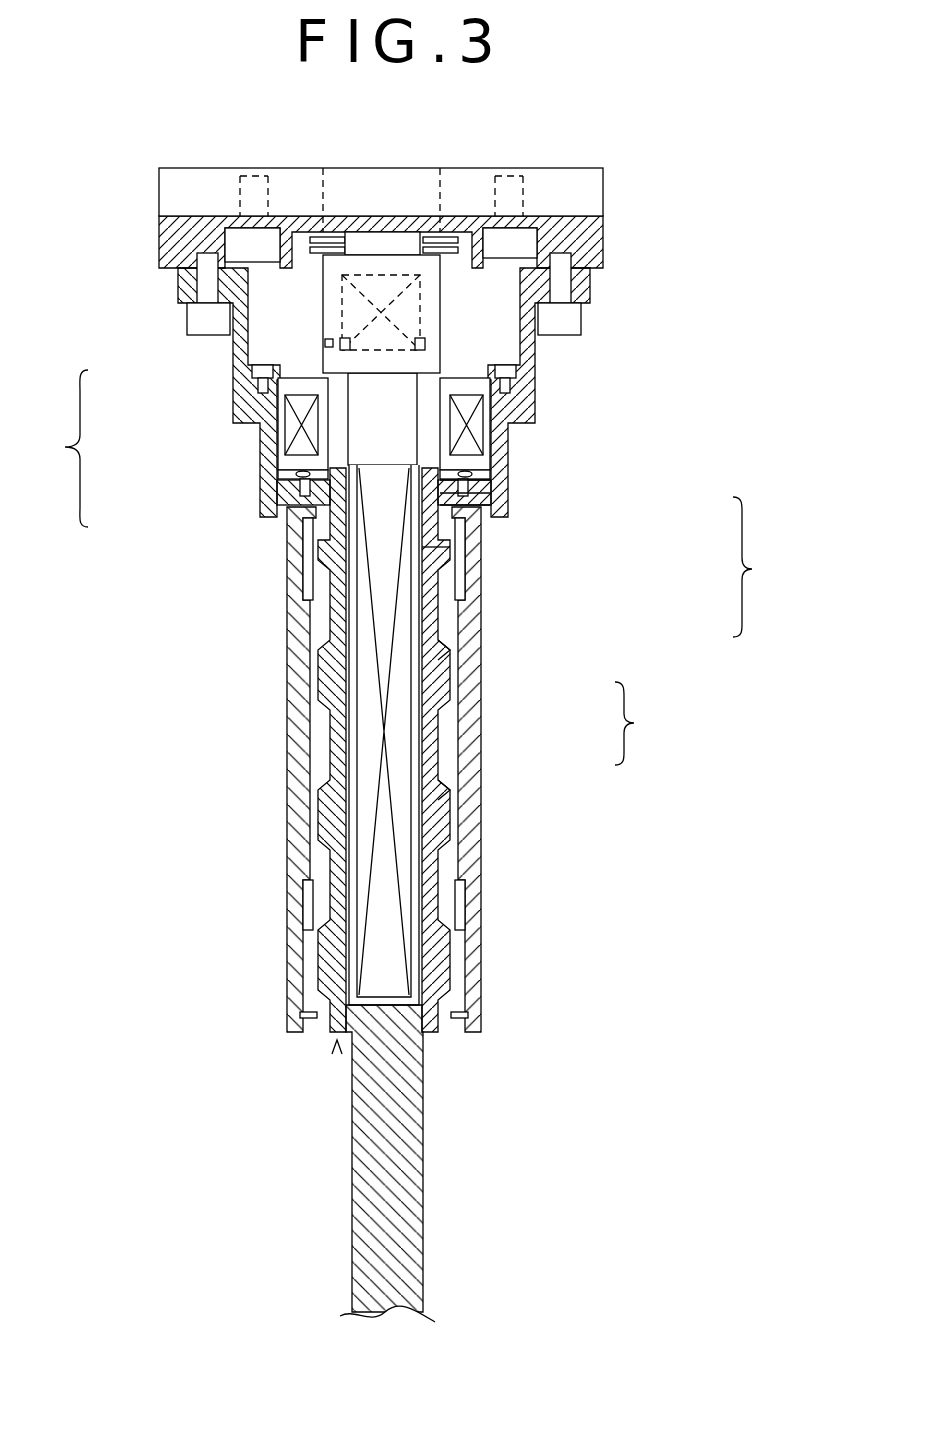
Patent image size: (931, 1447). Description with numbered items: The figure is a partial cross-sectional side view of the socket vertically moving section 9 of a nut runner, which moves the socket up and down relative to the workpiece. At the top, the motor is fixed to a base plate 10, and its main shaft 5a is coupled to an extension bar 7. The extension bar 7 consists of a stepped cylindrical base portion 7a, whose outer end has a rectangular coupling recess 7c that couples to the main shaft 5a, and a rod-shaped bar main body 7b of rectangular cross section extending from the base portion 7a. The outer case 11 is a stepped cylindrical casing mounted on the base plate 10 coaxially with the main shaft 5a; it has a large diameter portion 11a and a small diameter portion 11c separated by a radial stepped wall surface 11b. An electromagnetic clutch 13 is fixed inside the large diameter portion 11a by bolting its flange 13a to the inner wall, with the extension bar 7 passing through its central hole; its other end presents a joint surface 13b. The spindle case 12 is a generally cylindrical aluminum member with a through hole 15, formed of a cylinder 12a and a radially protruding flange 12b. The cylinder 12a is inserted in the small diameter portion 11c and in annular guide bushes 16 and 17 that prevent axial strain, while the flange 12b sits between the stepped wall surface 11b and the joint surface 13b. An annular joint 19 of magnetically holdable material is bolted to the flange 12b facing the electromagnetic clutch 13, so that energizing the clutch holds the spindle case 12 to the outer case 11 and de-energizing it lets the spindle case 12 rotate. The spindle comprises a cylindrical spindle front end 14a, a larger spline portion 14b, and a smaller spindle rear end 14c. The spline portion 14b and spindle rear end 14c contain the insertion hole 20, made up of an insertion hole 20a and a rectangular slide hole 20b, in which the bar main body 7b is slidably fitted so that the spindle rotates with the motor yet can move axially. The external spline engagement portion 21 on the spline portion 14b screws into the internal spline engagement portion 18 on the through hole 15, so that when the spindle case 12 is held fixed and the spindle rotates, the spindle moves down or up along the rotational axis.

The base plate 10 is at (583, 192).
The main shaft 5a is at (383, 307).
The socket vertically moving section 9 is at (702, 391).
The extension bar 7 is at (212, 447).
The base portion 7a is at (325, 343).
The bar main body 7b is at (380, 608).
The coupling recess 7c is at (383, 307).
The flange 13a is at (514, 370).
The electromagnetic clutch 13 is at (508, 420).
The joint surface 13b is at (508, 445).
The joint 19 is at (287, 476).
The outer case 11 is at (620, 554).
The large diameter portion 11a is at (508, 457).
The stepped wall surface 11b is at (508, 475).
The small diameter portion 11c is at (480, 652).
The spindle case 12 is at (285, 769).
The cylinder 12a is at (320, 673).
The flange 12b is at (266, 511).
The through hole 15 is at (320, 760).
The spline portion 14b is at (450, 888).
The spindle rear end 14c is at (445, 547).
The spindle front end 14a is at (423, 1123).
The guide bush 16 is at (470, 622).
The insertion hole 20 is at (546, 720).
The insertion hole 20a is at (422, 740).
The slide hole 20b is at (450, 647).
The guide bush 17 is at (303, 1022).
The spline engagement portion 18 is at (276, 1105).
The spline engagement portion 21 is at (337, 1042).